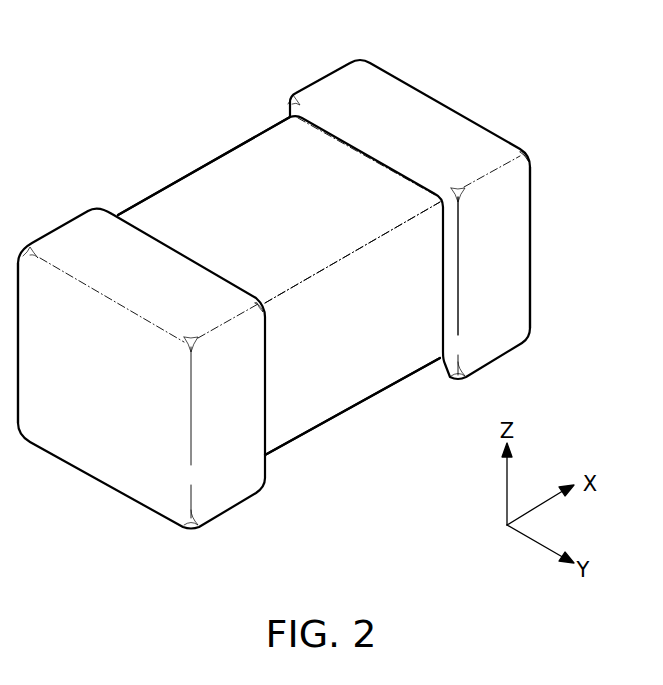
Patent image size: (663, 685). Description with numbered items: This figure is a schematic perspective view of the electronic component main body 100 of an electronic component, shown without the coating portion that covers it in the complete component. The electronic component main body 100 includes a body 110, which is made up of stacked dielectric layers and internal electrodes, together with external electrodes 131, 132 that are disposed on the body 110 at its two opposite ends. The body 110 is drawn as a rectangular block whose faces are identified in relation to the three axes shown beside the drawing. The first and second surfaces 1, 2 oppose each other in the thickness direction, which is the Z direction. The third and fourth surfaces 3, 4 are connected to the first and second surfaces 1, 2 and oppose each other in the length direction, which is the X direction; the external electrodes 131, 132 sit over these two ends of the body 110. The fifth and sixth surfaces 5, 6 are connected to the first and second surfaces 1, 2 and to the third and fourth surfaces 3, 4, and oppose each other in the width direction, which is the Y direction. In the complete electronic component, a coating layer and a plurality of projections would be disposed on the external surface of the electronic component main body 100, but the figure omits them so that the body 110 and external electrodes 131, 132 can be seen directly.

The electronic component main body 100 is at (141, 68).
The body 110 is at (153, 218).
The external electrode 131 is at (75, 240).
The external electrode 132 is at (330, 96).
The first surface 1 is at (315, 374).
The second surface 2 is at (303, 181).
The third surface 3 is at (111, 423).
The fourth surface 4 is at (480, 233).
The fifth surface 5 is at (371, 348).
The sixth surface 6 is at (249, 196).